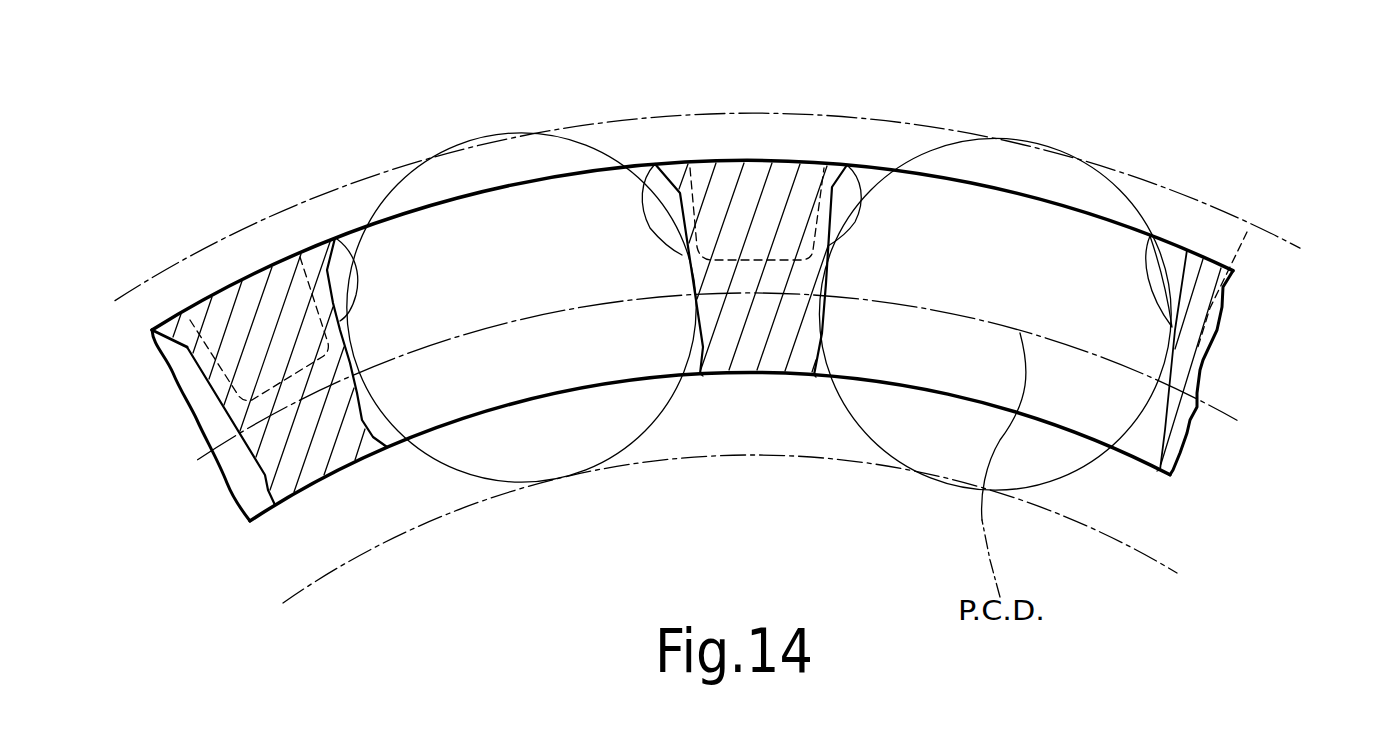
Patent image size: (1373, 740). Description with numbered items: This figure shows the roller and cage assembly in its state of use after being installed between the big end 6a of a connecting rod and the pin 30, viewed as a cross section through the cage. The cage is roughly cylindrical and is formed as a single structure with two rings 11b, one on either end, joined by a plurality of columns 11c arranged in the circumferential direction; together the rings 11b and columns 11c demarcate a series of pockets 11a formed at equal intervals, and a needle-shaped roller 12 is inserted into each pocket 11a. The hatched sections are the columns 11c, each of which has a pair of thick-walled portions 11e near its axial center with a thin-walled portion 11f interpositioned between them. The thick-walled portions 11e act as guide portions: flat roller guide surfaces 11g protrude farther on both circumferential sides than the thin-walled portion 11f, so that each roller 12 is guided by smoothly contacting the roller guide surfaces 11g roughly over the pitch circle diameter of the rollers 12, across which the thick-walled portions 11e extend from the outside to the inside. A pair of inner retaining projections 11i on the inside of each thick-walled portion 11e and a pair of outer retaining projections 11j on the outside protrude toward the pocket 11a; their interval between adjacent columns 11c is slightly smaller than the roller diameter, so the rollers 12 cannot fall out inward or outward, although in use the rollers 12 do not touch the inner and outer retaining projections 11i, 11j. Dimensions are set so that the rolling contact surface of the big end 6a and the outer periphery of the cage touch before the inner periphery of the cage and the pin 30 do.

The pocket 11a is at (897, 225).
The ring 11b is at (603, 168).
The column 11c is at (790, 158).
The thick-walled portion 11e is at (323, 463).
The thin-walled portion 11f is at (752, 185).
The roller guide surface 11g is at (652, 186).
The inner retaining projection 11i is at (276, 504).
The outer retaining projection 11j is at (660, 170).
The roller 12 is at (470, 170).
The big end 6a is at (1277, 226).
The pin 30 is at (1164, 574).